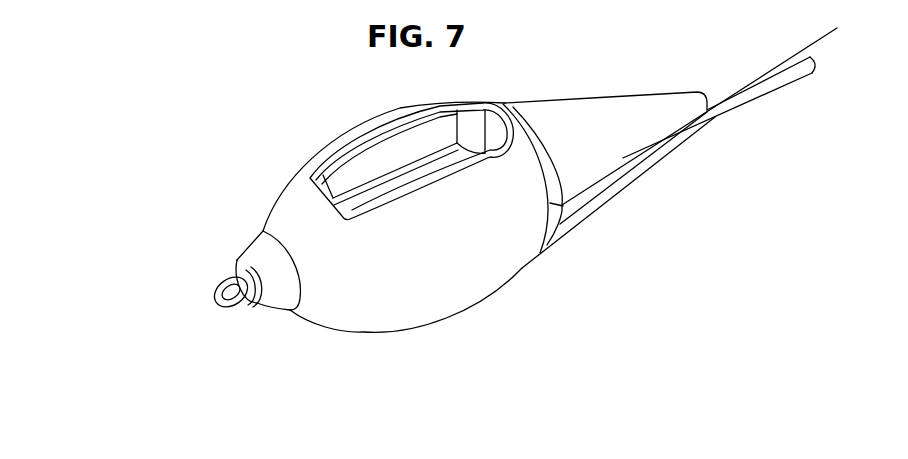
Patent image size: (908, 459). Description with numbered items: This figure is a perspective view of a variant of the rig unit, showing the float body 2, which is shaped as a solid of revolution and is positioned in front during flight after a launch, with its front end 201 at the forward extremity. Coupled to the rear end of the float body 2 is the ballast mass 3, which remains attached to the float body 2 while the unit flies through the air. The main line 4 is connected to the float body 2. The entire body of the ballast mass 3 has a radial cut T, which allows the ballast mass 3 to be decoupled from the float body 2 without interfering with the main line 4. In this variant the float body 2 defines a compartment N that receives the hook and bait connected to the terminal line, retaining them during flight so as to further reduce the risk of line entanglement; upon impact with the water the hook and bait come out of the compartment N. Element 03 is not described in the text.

The float body 2 is at (479, 298).
The ballast mass 3 is at (587, 96).
The main line 4 is at (817, 45).
The radial cut T is at (613, 173).
The compartment N is at (403, 152).
The front end 201 is at (270, 310).
The ring eyelet 03 is at (216, 313).